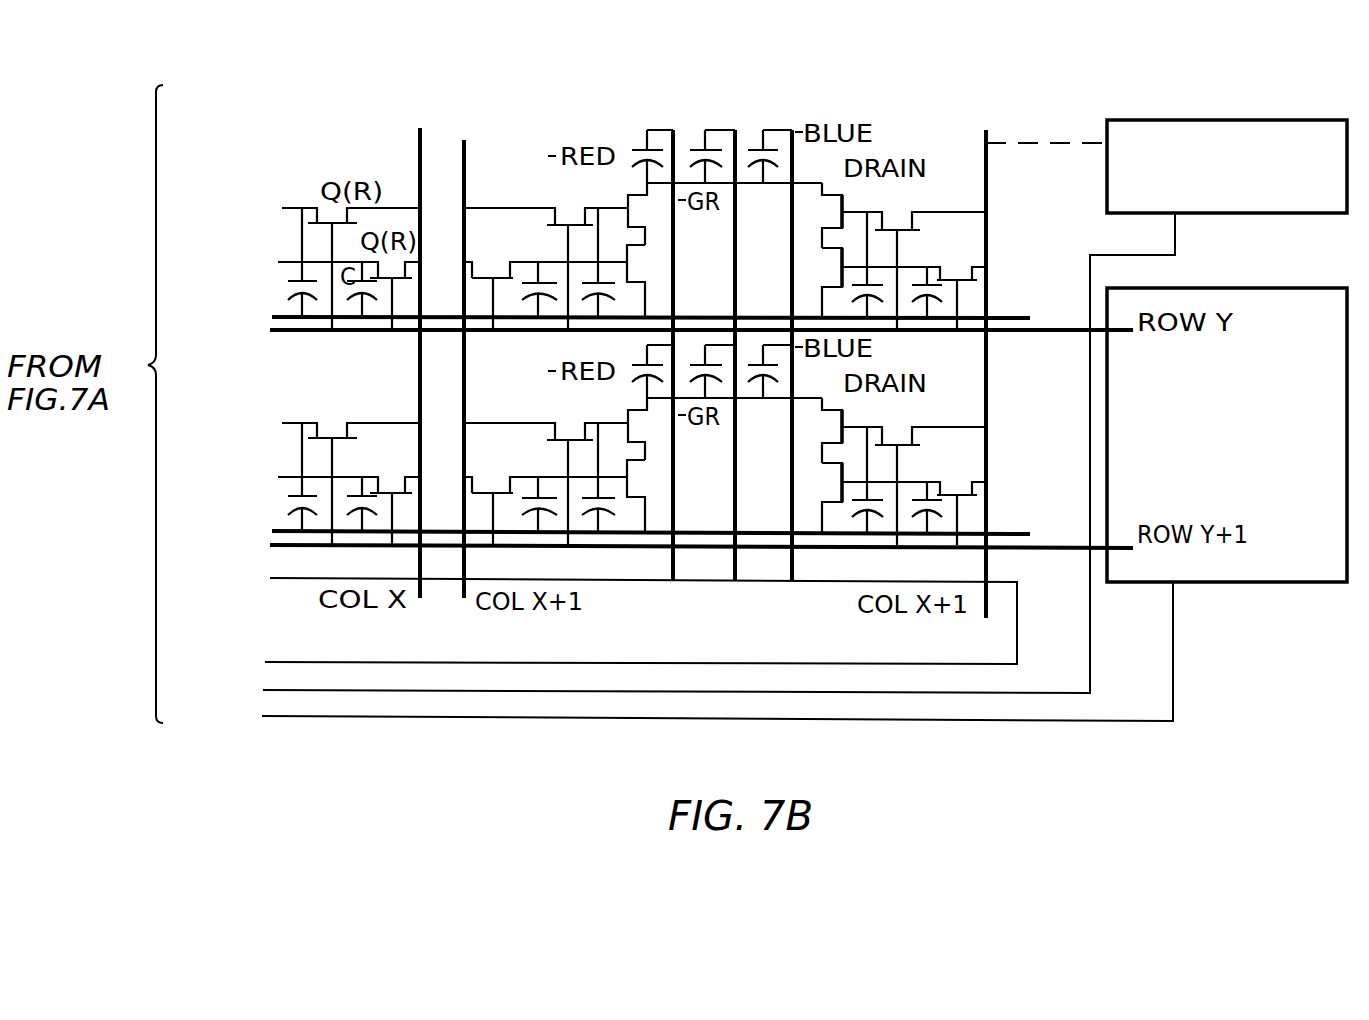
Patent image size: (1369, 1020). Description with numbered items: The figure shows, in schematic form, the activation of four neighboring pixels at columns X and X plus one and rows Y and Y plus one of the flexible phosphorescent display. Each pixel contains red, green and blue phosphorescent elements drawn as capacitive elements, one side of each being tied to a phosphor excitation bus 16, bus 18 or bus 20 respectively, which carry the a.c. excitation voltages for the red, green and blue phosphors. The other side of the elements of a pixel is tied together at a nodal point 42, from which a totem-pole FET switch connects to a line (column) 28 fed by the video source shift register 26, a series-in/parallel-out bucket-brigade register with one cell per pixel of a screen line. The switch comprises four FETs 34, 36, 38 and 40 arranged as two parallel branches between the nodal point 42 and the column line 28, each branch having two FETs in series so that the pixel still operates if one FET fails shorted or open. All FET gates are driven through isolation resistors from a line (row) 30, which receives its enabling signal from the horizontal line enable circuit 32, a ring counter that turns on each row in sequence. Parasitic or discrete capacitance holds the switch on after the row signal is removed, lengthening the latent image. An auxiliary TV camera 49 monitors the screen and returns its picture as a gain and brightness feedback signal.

The phosphor excitation bus 16 is at (659, 339).
The phosphor excitation bus 18 is at (722, 339).
The phosphor excitation bus 20 is at (776, 339).
The video source shift register 26 is at (604, 621).
The line (column) 28 is at (444, 348).
The line (row) 30 is at (701, 426).
The horizontal line enable circuit 32 is at (1227, 435).
The FET 34 is at (648, 321).
The FET 36 is at (647, 388).
The FET 38 is at (821, 323).
The FET 40 is at (821, 390).
The nodal point 42 is at (894, 374).
The auxiliary TV camera 49 is at (1227, 166).